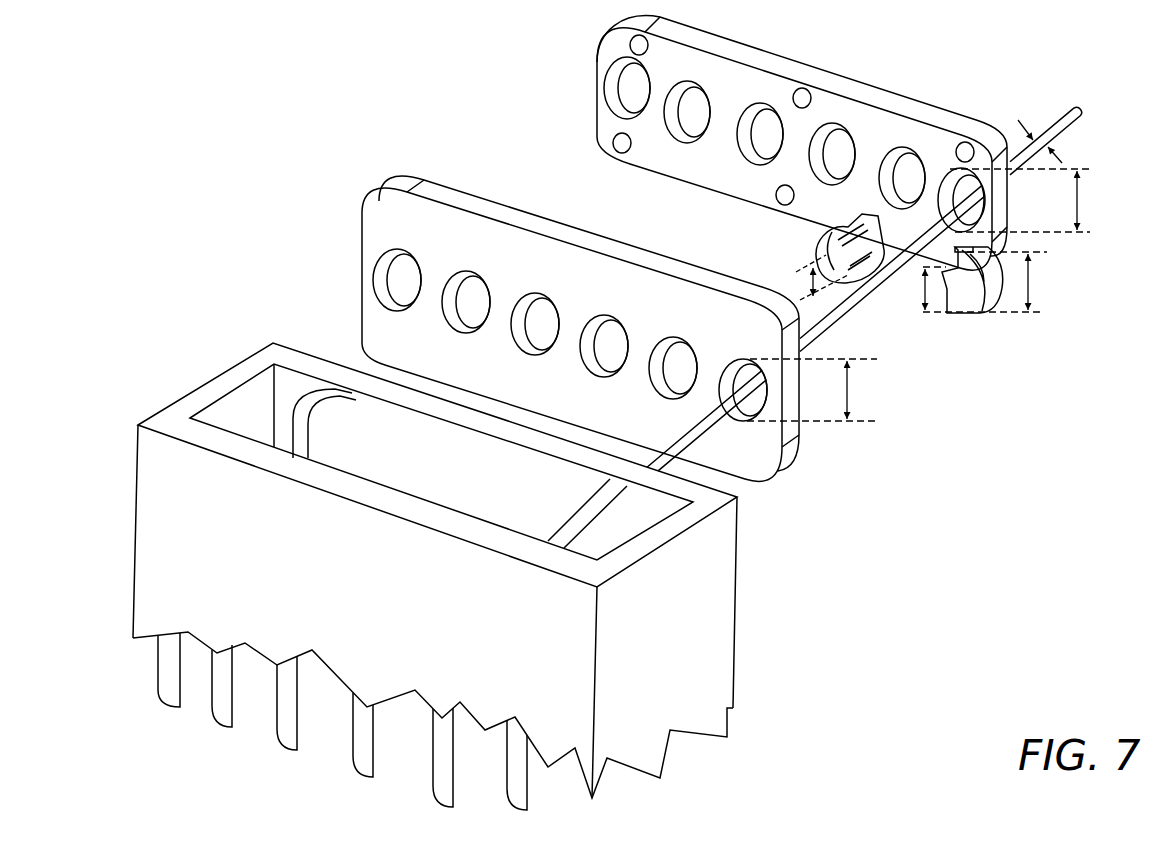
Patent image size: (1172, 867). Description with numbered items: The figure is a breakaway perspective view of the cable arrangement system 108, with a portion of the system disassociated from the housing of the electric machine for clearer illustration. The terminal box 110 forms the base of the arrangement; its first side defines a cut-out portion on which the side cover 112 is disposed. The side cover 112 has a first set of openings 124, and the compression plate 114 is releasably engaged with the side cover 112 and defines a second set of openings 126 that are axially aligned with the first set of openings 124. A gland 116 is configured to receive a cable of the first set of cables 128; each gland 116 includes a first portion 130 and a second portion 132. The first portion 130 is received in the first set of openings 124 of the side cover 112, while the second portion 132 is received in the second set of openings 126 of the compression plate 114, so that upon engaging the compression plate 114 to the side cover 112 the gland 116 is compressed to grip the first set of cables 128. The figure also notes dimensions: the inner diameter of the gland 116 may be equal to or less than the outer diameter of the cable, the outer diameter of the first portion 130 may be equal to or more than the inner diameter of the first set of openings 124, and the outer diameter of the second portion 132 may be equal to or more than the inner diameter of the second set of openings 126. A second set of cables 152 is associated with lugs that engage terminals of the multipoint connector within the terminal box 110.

The cable arrangement system 108 is at (360, 100).
The terminal box 110 is at (192, 532).
The side cover 112 is at (553, 232).
The compression plate 114 is at (925, 108).
The gland 116 is at (820, 240).
The first set of openings 124 is at (462, 313).
The second set of openings 126 is at (693, 107).
The first set of cables 128 is at (832, 311).
The first portion 130 is at (1000, 303).
The second portion 132 is at (990, 282).
The second set of cables 152 is at (223, 700).